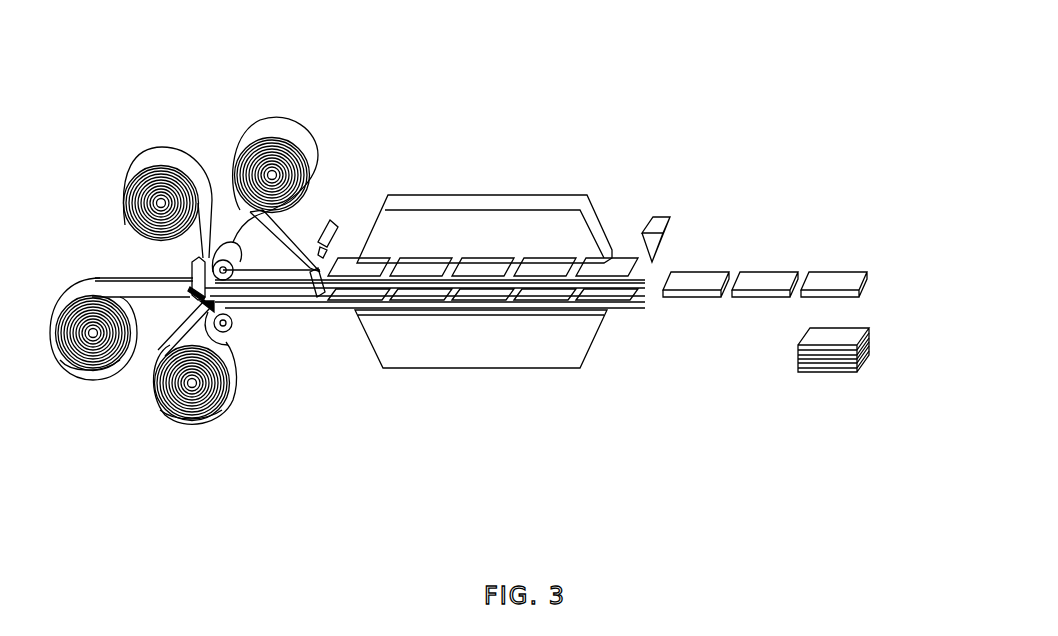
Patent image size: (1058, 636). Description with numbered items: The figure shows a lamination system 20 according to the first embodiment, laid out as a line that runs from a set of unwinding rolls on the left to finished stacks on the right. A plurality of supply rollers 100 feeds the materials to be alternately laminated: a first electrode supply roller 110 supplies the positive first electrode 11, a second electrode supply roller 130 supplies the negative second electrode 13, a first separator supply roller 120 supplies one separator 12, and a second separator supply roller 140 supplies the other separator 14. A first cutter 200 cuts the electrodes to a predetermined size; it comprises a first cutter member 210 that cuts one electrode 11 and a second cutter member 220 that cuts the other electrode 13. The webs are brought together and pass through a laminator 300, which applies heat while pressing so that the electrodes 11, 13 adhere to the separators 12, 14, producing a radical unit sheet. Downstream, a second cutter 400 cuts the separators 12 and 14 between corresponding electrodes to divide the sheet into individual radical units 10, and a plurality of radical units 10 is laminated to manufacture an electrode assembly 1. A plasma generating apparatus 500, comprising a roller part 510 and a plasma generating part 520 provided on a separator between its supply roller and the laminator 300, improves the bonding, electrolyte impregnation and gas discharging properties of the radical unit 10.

The lamination system 20 is at (649, 98).
The plurality of supply rollers 100 is at (57, 62).
The first electrode supply roller 110 is at (271, 176).
The first separator supply roller 120 is at (161, 203).
The second electrode supply roller 130 is at (93, 333).
The second separator supply roller 140 is at (192, 383).
The electrode 11 is at (287, 130).
The separator 12 is at (277, 277).
The electrode 13 is at (88, 368).
The separator 14 is at (190, 415).
The first cutter 200 is at (410, 115).
The first cutter member 210 is at (336, 222).
The second cutter member 220 is at (312, 190).
The laminator 300 is at (510, 333).
The second cutter 400 is at (660, 218).
The plasma generating apparatus 500 is at (342, 442).
The roller part 510 is at (230, 318).
The plasma generating part 520 is at (222, 325).
The radical unit 10 is at (843, 253).
The electrode assembly 1 is at (866, 336).